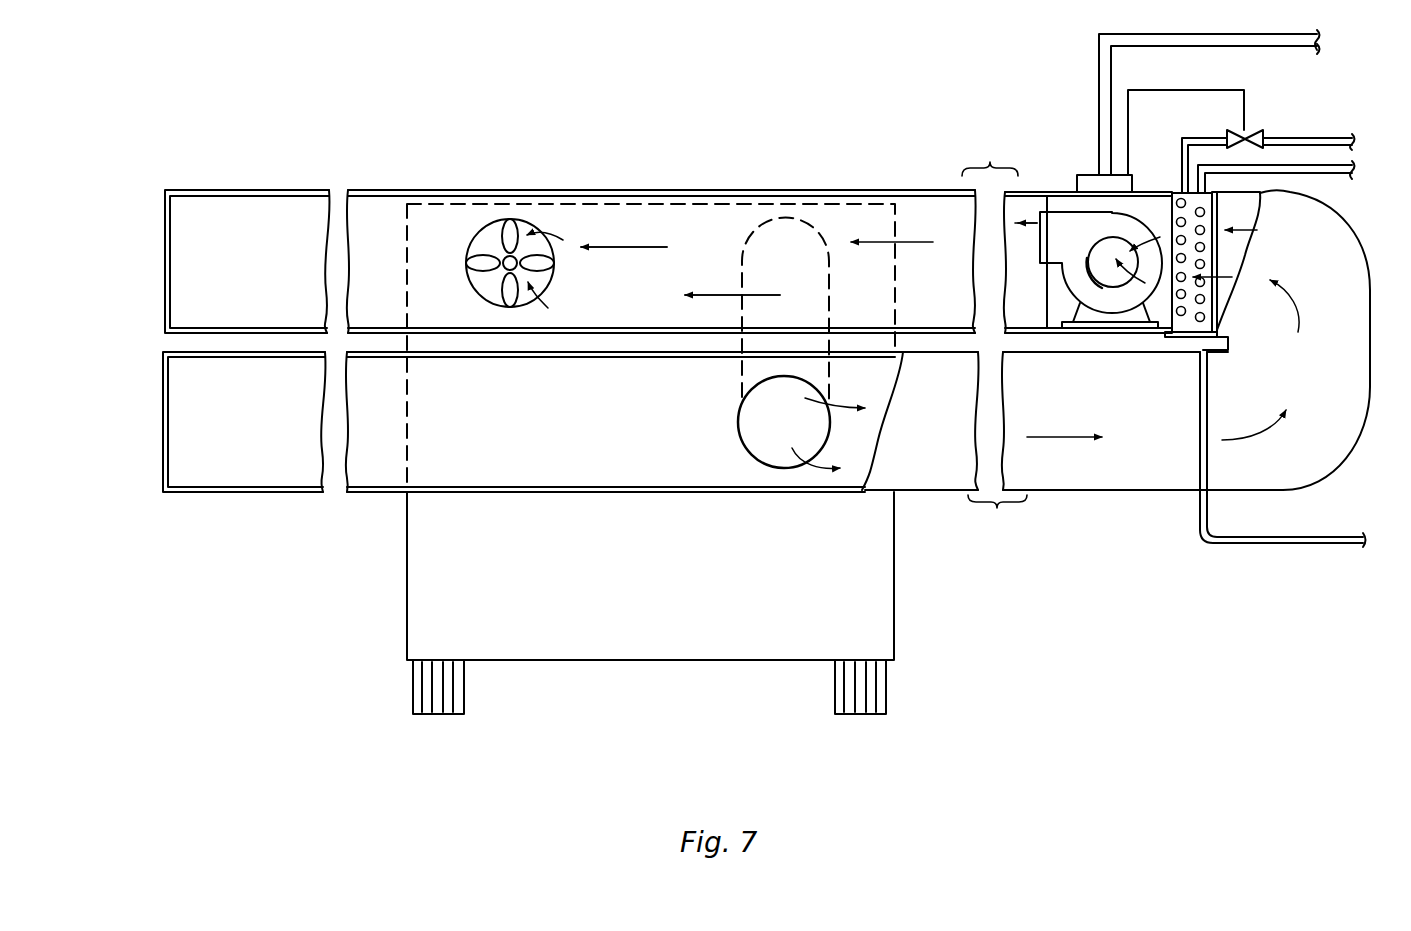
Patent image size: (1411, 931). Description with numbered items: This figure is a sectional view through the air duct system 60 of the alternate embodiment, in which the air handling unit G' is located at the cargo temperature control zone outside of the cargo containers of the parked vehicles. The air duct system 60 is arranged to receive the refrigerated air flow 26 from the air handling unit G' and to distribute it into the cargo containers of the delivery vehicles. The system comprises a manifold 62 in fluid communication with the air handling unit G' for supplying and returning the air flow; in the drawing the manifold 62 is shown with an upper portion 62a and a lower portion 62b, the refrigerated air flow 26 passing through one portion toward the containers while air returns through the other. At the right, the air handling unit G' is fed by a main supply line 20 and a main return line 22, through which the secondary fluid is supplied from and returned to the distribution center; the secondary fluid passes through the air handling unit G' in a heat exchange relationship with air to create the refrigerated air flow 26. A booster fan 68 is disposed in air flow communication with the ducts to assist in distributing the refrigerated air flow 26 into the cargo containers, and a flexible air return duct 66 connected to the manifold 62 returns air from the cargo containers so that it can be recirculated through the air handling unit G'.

The air duct system 60 is at (273, 186).
The manifold 62 is at (552, 190).
The upper duct portion 62a is at (648, 190).
The lower duct portion 62b is at (368, 492).
The refrigerated air flow 26 is at (912, 242).
The booster fan 68 is at (548, 308).
The flexible air return duct 66 is at (742, 373).
The main return line 22 is at (1293, 138).
The main supply line 20 is at (1337, 175).
The air handling unit G' is at (1170, 179).